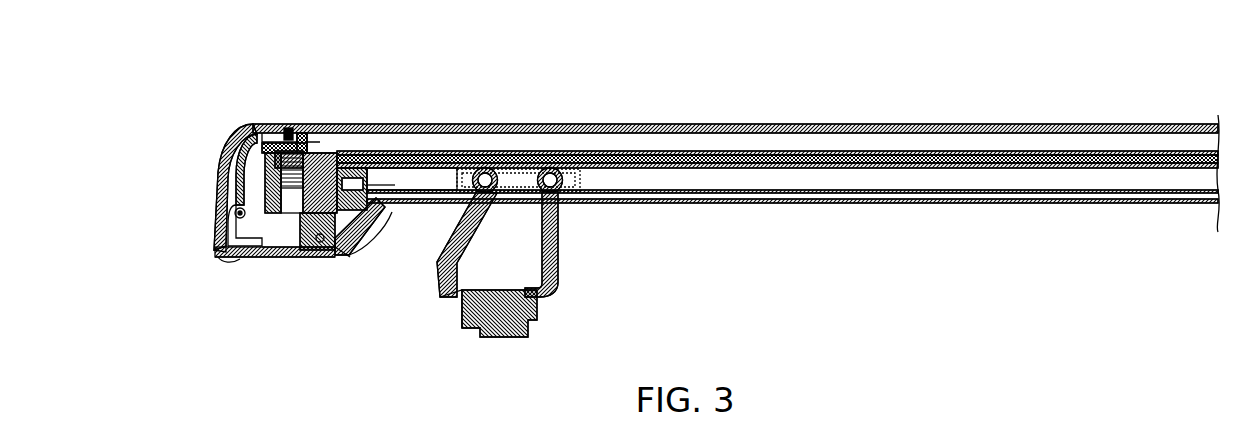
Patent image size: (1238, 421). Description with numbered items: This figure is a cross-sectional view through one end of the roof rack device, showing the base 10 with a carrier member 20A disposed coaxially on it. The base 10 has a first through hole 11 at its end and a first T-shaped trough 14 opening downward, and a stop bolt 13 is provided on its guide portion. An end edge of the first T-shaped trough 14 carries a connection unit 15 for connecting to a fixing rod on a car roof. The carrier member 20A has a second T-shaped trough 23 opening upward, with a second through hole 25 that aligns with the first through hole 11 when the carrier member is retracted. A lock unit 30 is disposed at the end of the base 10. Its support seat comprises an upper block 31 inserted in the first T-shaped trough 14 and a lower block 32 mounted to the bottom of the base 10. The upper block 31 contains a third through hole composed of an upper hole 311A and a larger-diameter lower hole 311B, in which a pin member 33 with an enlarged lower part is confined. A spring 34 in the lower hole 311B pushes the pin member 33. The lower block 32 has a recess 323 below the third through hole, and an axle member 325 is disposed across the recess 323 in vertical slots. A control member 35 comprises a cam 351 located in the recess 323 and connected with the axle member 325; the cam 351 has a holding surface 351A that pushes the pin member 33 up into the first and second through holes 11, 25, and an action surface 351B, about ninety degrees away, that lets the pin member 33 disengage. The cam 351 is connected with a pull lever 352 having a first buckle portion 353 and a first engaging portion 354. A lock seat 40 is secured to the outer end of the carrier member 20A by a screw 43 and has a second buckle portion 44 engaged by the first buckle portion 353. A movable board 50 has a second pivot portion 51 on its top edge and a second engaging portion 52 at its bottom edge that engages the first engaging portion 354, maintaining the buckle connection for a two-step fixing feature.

The base 10 is at (845, 203).
The first through hole 11 is at (320, 150).
The stop bolt 13 is at (1112, 166).
The first T-shaped trough 14 is at (408, 185).
The connection unit 15 is at (558, 243).
The carrier member 20A is at (843, 127).
The second T-shaped trough 23 is at (670, 138).
The second through hole 25 is at (313, 150).
The lock unit 30 is at (330, 258).
The upper block 31 is at (375, 153).
The upper hole 311A is at (340, 150).
The lower hole 311B is at (290, 257).
The lower block 32 is at (355, 210).
The recess 323 is at (372, 222).
The axle member 325 is at (332, 262).
The pin member 33 is at (240, 182).
The spring 34 is at (237, 152).
The control member 35 is at (260, 257).
The cam 351 is at (317, 257).
The holding surface 351A is at (372, 185).
The action surface 351B is at (350, 257).
The pull lever 352 is at (278, 258).
The first buckle portion 353 is at (240, 208).
The first engaging portion 354 is at (230, 262).
The lock seat 40 is at (237, 145).
The screw 43 is at (290, 128).
The second buckle portion 44 is at (210, 257).
The movable board 50 is at (240, 162).
The second pivot portion 51 is at (262, 127).
The second engaging portion 52 is at (240, 197).